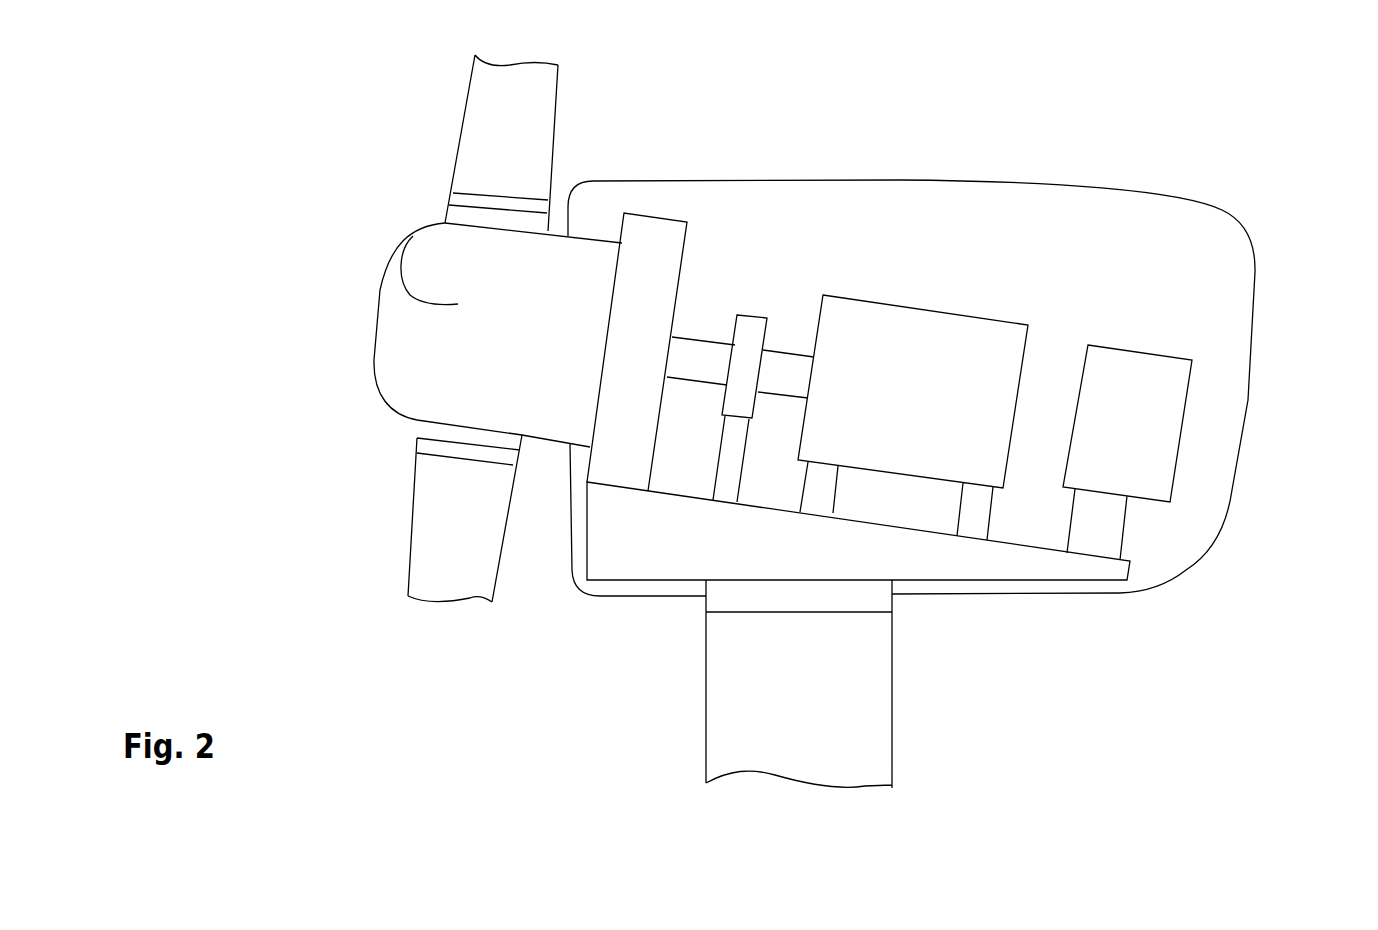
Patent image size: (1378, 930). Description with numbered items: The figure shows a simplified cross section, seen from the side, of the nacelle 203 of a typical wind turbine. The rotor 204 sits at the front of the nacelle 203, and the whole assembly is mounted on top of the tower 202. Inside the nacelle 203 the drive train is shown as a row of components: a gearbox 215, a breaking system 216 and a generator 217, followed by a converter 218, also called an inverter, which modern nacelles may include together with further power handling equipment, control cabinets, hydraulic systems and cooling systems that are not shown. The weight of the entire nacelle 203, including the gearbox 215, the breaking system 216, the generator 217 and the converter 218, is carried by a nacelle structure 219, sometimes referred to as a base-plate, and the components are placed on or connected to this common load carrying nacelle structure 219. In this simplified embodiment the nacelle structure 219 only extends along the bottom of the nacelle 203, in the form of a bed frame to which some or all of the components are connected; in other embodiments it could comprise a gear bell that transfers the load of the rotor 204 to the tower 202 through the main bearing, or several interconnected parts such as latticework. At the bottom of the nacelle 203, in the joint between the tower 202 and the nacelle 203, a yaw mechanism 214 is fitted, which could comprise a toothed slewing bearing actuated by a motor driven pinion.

The tower 202 is at (867, 750).
The nacelle 203 is at (1290, 207).
The rotor 204 is at (413, 236).
The yaw mechanism 214 is at (973, 560).
The gearbox 215 is at (653, 245).
The breaking system 216 is at (752, 333).
The generator 217 is at (883, 347).
The converter 218 is at (1147, 395).
The nacelle structure 219 is at (730, 595).